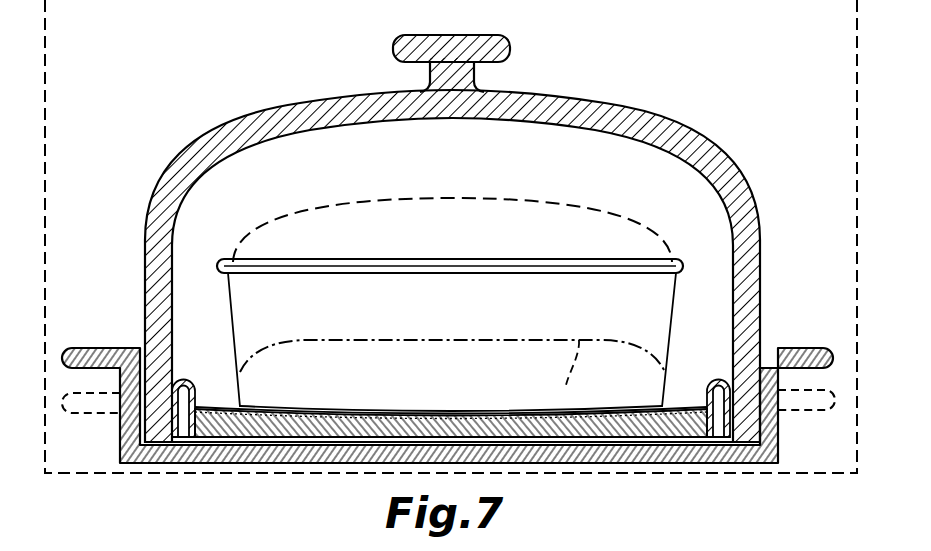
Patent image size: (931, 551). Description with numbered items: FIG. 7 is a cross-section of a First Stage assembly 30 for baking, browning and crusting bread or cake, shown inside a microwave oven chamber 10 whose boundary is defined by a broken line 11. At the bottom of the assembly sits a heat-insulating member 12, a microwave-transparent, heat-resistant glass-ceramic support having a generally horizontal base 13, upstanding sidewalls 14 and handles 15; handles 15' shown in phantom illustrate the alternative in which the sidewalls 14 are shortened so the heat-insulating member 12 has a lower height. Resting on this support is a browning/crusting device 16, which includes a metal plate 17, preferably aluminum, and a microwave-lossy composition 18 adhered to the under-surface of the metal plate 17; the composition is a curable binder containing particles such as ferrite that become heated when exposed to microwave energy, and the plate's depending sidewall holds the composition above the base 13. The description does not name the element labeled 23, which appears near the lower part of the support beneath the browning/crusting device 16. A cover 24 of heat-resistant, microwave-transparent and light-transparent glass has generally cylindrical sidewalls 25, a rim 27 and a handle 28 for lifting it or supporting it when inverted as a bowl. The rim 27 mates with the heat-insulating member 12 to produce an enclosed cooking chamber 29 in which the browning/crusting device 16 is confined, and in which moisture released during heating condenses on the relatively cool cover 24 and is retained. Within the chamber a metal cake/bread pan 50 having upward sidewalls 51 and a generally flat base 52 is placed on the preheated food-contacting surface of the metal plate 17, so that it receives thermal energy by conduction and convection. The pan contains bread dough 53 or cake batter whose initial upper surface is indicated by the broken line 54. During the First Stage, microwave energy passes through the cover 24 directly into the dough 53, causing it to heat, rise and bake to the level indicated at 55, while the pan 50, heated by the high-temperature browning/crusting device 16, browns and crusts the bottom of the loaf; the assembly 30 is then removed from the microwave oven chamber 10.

The microwave oven chamber 10 is at (121, 39).
The broken line 11 is at (45, 100).
The heat-insulating member 12 is at (168, 465).
The base 13 is at (488, 432).
The sidewalls 14 is at (120, 436).
The handles 15 is at (446, 323).
The handles 15' is at (446, 394).
The browning/crusting device 16 is at (222, 403).
The metal plate 17 is at (688, 403).
The microwave-lossy composition 18 is at (228, 465).
The base plate 23 is at (318, 470).
The cover 24 is at (670, 118).
The sidewalls 25 is at (145, 278).
The rim 27 is at (135, 468).
The handles 28 is at (393, 58).
The cooking chamber 29 is at (472, 174).
The First Stage assembly 30 is at (198, 112).
The cake/bread pan 50 is at (472, 316).
The sidewalls 51 is at (228, 304).
The base 52 is at (432, 413).
The bread dough 53 is at (579, 338).
The broken line 54 is at (388, 338).
The level 55 is at (548, 198).